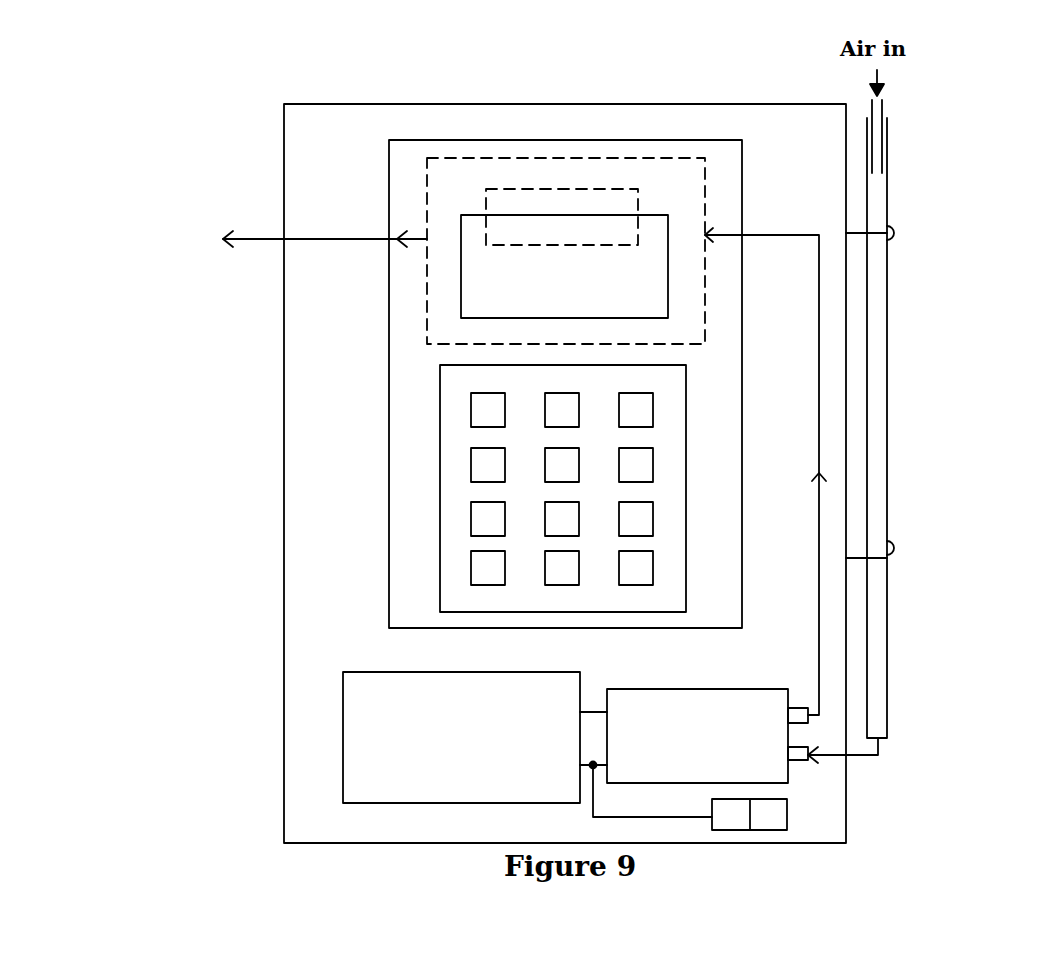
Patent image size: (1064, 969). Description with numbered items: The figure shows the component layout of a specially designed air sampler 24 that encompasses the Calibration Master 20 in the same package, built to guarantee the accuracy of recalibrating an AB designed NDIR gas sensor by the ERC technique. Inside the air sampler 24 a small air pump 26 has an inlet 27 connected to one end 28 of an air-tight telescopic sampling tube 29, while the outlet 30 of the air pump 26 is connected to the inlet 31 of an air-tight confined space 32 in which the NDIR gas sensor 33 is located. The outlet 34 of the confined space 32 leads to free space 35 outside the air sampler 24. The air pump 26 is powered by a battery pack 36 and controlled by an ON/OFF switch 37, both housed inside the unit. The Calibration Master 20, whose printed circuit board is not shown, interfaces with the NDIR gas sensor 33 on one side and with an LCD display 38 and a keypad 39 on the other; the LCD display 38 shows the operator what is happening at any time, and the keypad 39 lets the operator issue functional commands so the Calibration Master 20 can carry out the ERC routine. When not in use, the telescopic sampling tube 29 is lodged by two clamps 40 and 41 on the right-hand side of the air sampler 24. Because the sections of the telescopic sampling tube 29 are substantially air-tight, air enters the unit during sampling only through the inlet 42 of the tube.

The Calibration Master 20 is at (387, 438).
The air sampler 24 is at (283, 539).
The air pump 26 is at (703, 737).
The inlet 27 is at (807, 745).
The end 28 is at (878, 748).
The air-tight telescopic sampling tube 29 is at (887, 403).
The outlet 30 is at (807, 706).
The inlet 31 is at (780, 232).
The confined space 32 is at (426, 206).
The NDIR gas sensor 33 is at (570, 188).
The outlet 34 is at (398, 242).
The free space 35 is at (269, 262).
The battery pack 36 is at (467, 718).
The ON/OFF switch 37 is at (765, 815).
The LCD display 38 is at (668, 277).
The keypad 39 is at (686, 415).
The clamp 40 is at (898, 227).
The clamp 41 is at (898, 545).
The inlet 42 is at (885, 110).